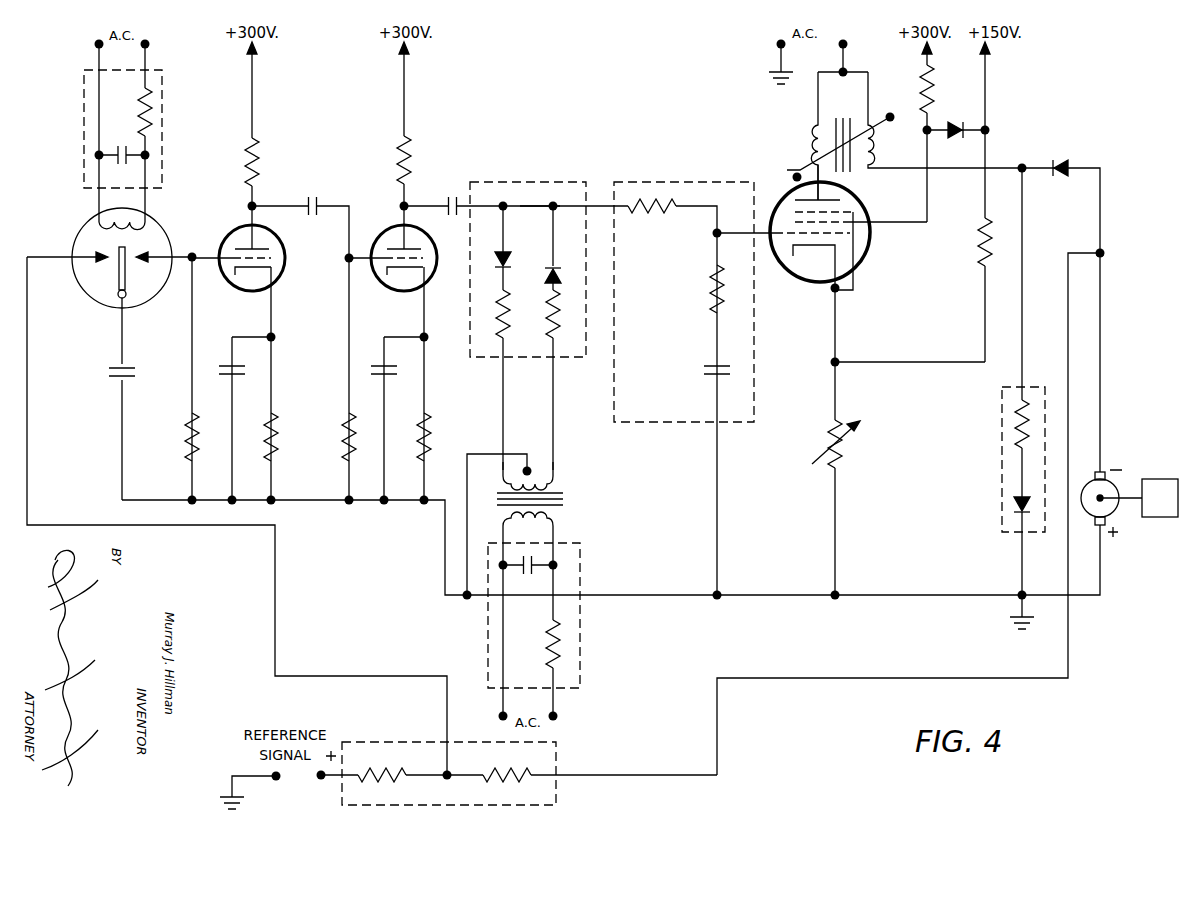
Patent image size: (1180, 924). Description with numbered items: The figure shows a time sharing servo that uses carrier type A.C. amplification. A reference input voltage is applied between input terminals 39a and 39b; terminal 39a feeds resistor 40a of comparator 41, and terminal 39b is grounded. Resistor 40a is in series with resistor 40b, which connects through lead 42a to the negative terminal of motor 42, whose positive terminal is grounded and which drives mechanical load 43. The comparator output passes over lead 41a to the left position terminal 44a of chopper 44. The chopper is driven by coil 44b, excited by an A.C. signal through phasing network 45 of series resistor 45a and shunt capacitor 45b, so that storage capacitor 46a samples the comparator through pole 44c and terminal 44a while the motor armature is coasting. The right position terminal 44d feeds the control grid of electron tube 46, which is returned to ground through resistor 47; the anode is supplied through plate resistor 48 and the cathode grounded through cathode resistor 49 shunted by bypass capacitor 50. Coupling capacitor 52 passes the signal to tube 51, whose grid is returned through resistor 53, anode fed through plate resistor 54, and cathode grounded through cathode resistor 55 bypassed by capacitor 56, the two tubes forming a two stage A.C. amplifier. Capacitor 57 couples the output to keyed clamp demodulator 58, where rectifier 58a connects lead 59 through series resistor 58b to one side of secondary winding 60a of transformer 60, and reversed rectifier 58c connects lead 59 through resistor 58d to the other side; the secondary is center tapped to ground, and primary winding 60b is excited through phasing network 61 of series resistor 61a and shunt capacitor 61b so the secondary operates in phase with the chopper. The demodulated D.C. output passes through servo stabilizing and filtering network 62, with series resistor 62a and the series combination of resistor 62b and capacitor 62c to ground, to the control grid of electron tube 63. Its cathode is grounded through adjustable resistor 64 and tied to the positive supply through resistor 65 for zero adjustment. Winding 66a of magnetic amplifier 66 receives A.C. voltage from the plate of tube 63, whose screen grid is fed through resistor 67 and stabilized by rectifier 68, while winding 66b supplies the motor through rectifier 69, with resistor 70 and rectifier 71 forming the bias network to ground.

The input terminal 39a is at (321, 782).
The input terminal 39b is at (275, 782).
The resistor 40a is at (420, 766).
The resistor 40b is at (600, 766).
The comparator 41 is at (425, 740).
The lead 41a is at (278, 598).
The motor 42 is at (1118, 520).
The lead 42a is at (717, 712).
The mechanical load 43 is at (1140, 498).
The chopper 44 is at (105, 302).
The left position terminal 44a is at (100, 262).
The coil 44b is at (142, 222).
The pole 44c is at (126, 282).
The right position terminal 44d is at (140, 262).
The phasing network 45 is at (162, 124).
The series resistor 45a is at (143, 110).
The shunt capacitor 45b is at (121, 150).
The electron tube 46 is at (233, 286).
The storage capacitor 46a is at (112, 376).
The resistor 47 is at (190, 420).
The plate resistor 48 is at (262, 172).
The cathode resistor 49 is at (272, 422).
The bypass capacitor 50 is at (228, 374).
The electron tube 51 is at (382, 286).
The coupling capacitor 52 is at (318, 202).
The resistor 53 is at (345, 438).
The plate resistor 54 is at (400, 150).
The cathode resistor 55 is at (428, 422).
The capacitor 56 is at (382, 376).
The capacitor 57 is at (453, 198).
The keyed clamp demodulator 58 is at (529, 180).
The rectifier 58a is at (510, 272).
The series resistor 58b is at (500, 342).
The rectifier 58c is at (548, 264).
The resistor 58d is at (556, 342).
The lead 59 is at (540, 204).
The transformer 60 is at (565, 499).
The secondary winding 60a is at (556, 477).
The primary winding 60b is at (556, 521).
The phasing network 61 is at (488, 640).
The series resistor 61a is at (548, 640).
The shunt capacitor 61b is at (527, 577).
The servo stabilizing and filtering network 62 is at (661, 180).
The series resistor 62a is at (650, 212).
The resistor 62b is at (712, 308).
The capacitor 62c is at (710, 375).
The electron tube 63 is at (808, 284).
The adjustable resistor 64 is at (812, 463).
The resistor 65 is at (982, 270).
The magnetic amplifier 66 is at (840, 120).
The winding 66a is at (812, 146).
The winding 66b is at (873, 157).
The resistor 67 is at (933, 106).
The voltage stabilizing rectifier 68 is at (970, 126).
The rectifier 69 is at (1066, 164).
The resistor 70 is at (1015, 428).
The rectifier 71 is at (1012, 506).